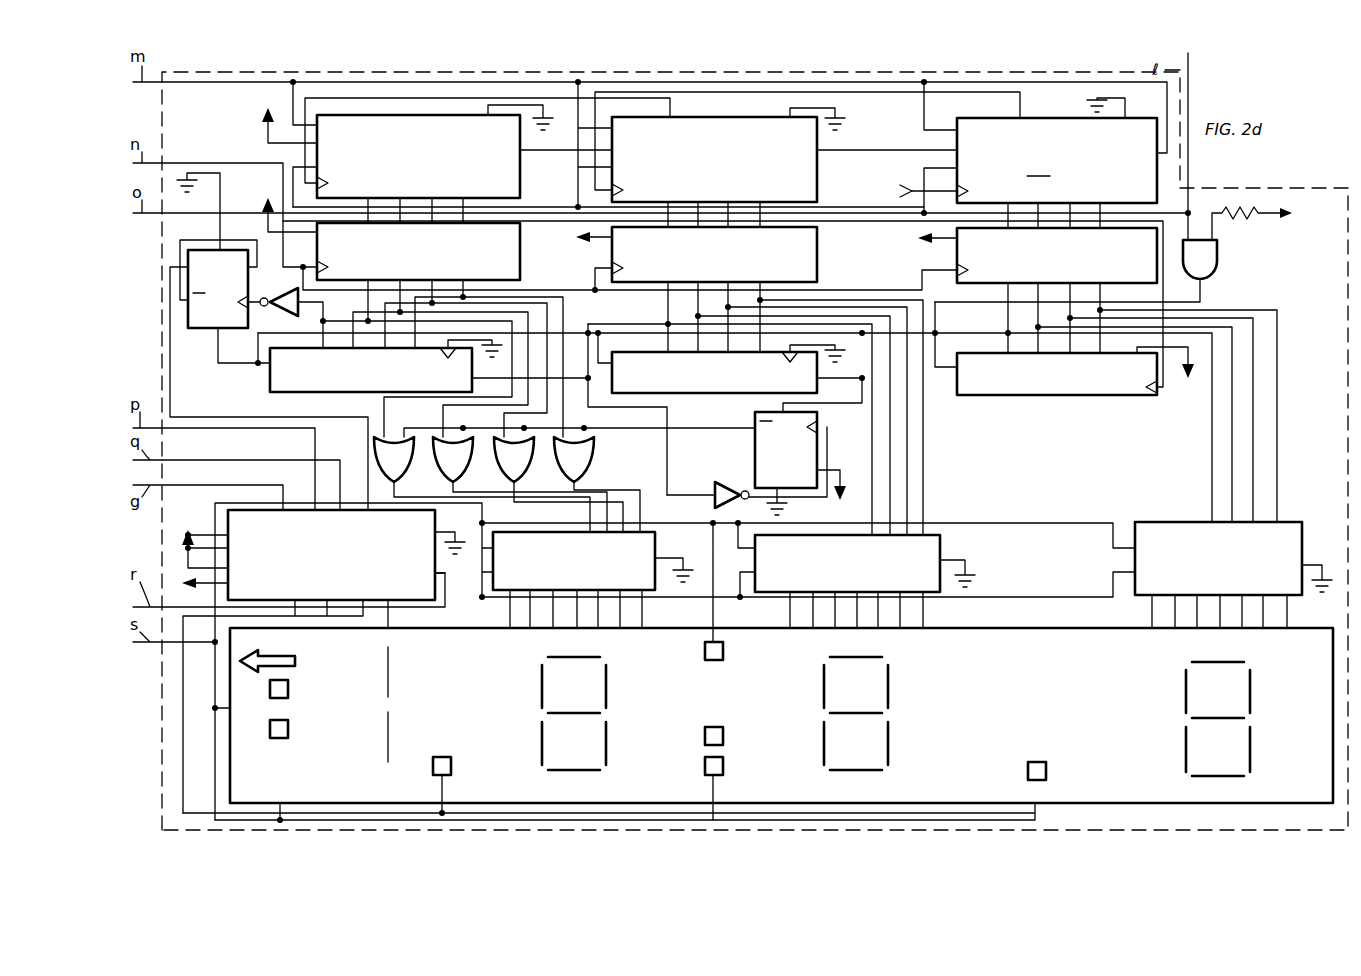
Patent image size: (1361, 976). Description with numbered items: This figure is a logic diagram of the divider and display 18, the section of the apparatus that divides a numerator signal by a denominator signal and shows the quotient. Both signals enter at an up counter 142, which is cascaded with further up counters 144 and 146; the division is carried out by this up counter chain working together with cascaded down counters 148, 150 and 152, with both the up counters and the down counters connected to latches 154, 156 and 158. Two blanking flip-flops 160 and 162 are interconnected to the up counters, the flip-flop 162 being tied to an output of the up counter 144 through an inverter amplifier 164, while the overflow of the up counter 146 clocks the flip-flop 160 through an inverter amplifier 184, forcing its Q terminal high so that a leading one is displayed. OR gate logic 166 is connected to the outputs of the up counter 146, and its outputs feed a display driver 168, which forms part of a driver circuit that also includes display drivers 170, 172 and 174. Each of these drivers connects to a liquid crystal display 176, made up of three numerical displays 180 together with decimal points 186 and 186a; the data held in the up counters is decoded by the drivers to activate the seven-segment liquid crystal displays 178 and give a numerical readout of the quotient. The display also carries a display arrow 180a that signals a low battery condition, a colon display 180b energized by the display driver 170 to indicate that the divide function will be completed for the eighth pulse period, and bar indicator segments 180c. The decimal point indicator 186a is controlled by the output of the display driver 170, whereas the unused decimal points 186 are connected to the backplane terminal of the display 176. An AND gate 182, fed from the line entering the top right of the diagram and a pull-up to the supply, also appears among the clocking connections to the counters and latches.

The divider and display 18 is at (1313, 285).
The up counter 142 is at (1046, 390).
The up counter 144 is at (694, 388).
The up counter 146 is at (340, 386).
The down counter 148 is at (1078, 167).
The down counter 150 is at (730, 169).
The down counter 152 is at (436, 167).
The latch 154 is at (957, 262).
The latch 156 is at (817, 266).
The latch 158 is at (520, 266).
The blanking flip-flop 160 is at (215, 333).
The blanking flip-flop 162 is at (818, 424).
The inverter amplifier 164 is at (736, 482).
The OR gate logic 166 is at (636, 454).
The display driver 168 is at (646, 592).
The display driver 170 is at (342, 559).
The display driver 172 is at (935, 558).
The display driver 174 is at (1172, 520).
The liquid crystal display 176 is at (1228, 806).
The liquid crystal displays 178 is at (522, 721).
The numerical displays 180 is at (347, 712).
The display arrow 180a is at (296, 663).
The colon display 180b is at (290, 728).
The bar indicators 180c is at (390, 712).
The AND gate 182 is at (1219, 257).
The inverter amplifier 184 is at (289, 297).
The decimal points 186 is at (442, 756).
The decimal point indicator 186a is at (1030, 763).